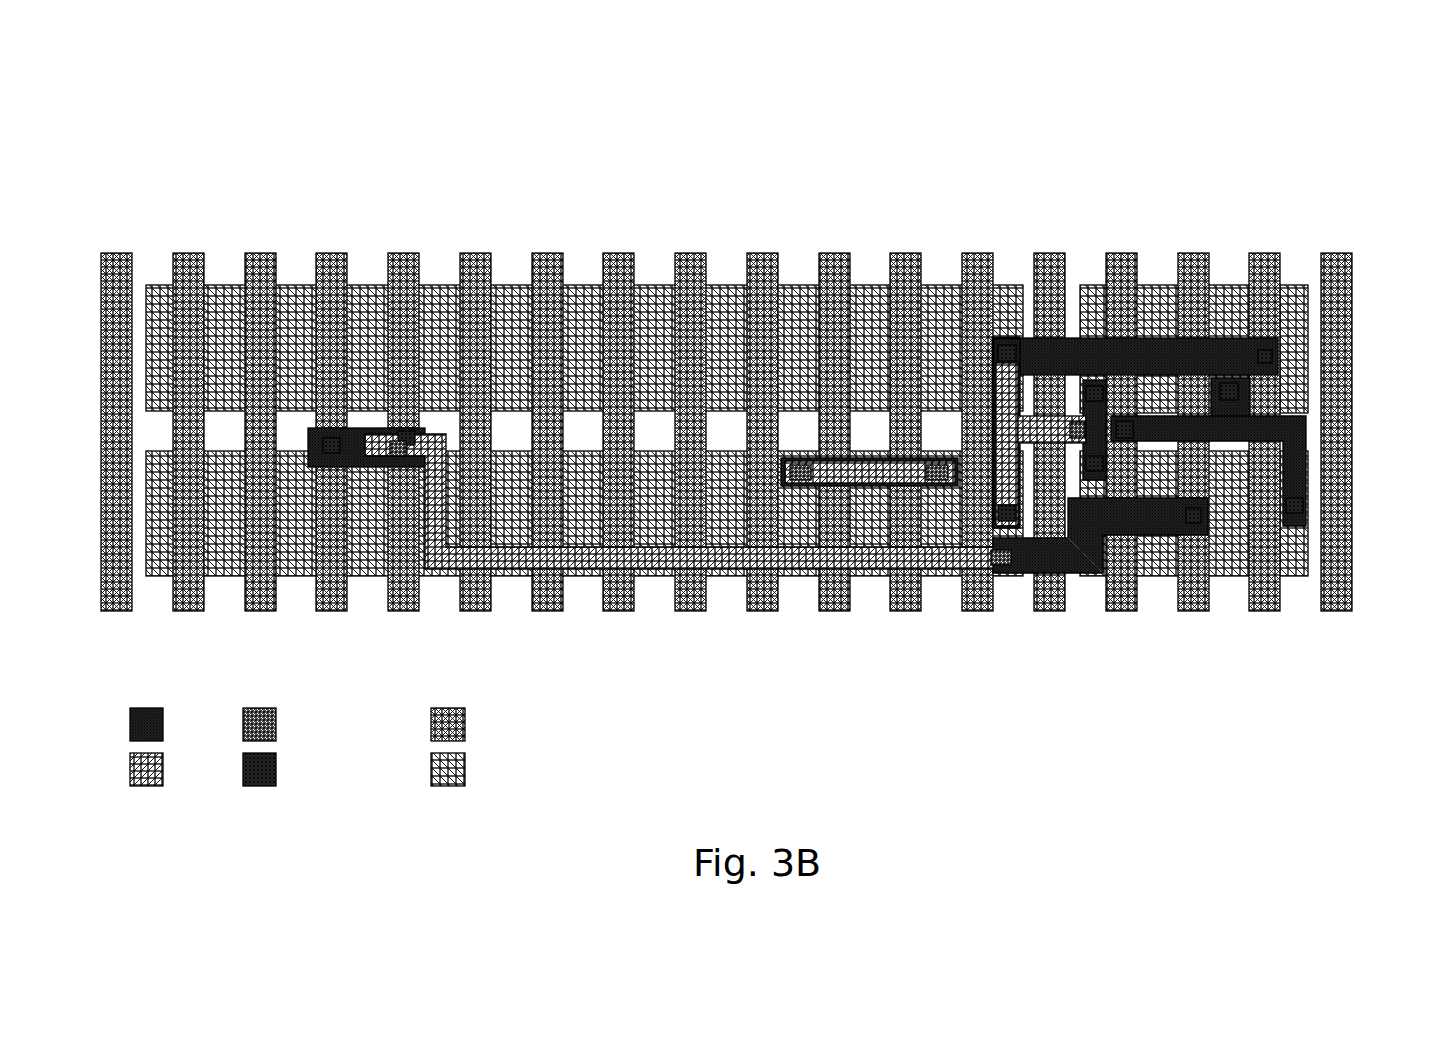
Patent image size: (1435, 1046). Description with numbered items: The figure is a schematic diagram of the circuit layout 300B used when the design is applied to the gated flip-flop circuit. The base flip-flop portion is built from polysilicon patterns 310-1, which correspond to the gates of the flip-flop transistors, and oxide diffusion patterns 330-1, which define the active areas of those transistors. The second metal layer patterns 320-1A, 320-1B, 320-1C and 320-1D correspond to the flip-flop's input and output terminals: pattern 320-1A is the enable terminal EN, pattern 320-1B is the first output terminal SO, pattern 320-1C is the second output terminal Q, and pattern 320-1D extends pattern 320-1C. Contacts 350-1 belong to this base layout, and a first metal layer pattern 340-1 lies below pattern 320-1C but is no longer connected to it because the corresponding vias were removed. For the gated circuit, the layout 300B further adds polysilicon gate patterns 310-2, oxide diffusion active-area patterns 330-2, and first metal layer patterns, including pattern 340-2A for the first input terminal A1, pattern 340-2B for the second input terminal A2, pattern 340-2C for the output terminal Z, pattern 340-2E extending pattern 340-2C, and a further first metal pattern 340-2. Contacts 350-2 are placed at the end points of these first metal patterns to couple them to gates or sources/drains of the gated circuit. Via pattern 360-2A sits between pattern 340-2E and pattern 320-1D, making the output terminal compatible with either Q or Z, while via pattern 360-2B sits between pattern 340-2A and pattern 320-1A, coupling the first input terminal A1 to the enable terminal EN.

The circuit layout 300B is at (157, 78).
The patterns 310-1 is at (108, 603).
The patterns 310-2 is at (1113, 603).
The patterns 330-1 is at (640, 290).
The patterns 330-2 is at (1288, 297).
The pattern 320-1A is at (428, 426).
The pattern 320-1B is at (857, 453).
The pattern 320-1C is at (1000, 355).
The pattern 320-1D is at (1032, 408).
The pattern 340-1 is at (1012, 330).
The M1 conductive line 340-2 is at (1290, 418).
The pattern 340-2A is at (1064, 567).
The pattern 340-2B is at (1222, 375).
The pattern 340-2C is at (1195, 335).
The pattern 340-2E is at (1022, 567).
The patterns 350-1 is at (997, 337).
The patterns 350-2 is at (1264, 347).
The pattern 360-2A is at (1072, 416).
The pattern 360-2B is at (985, 552).